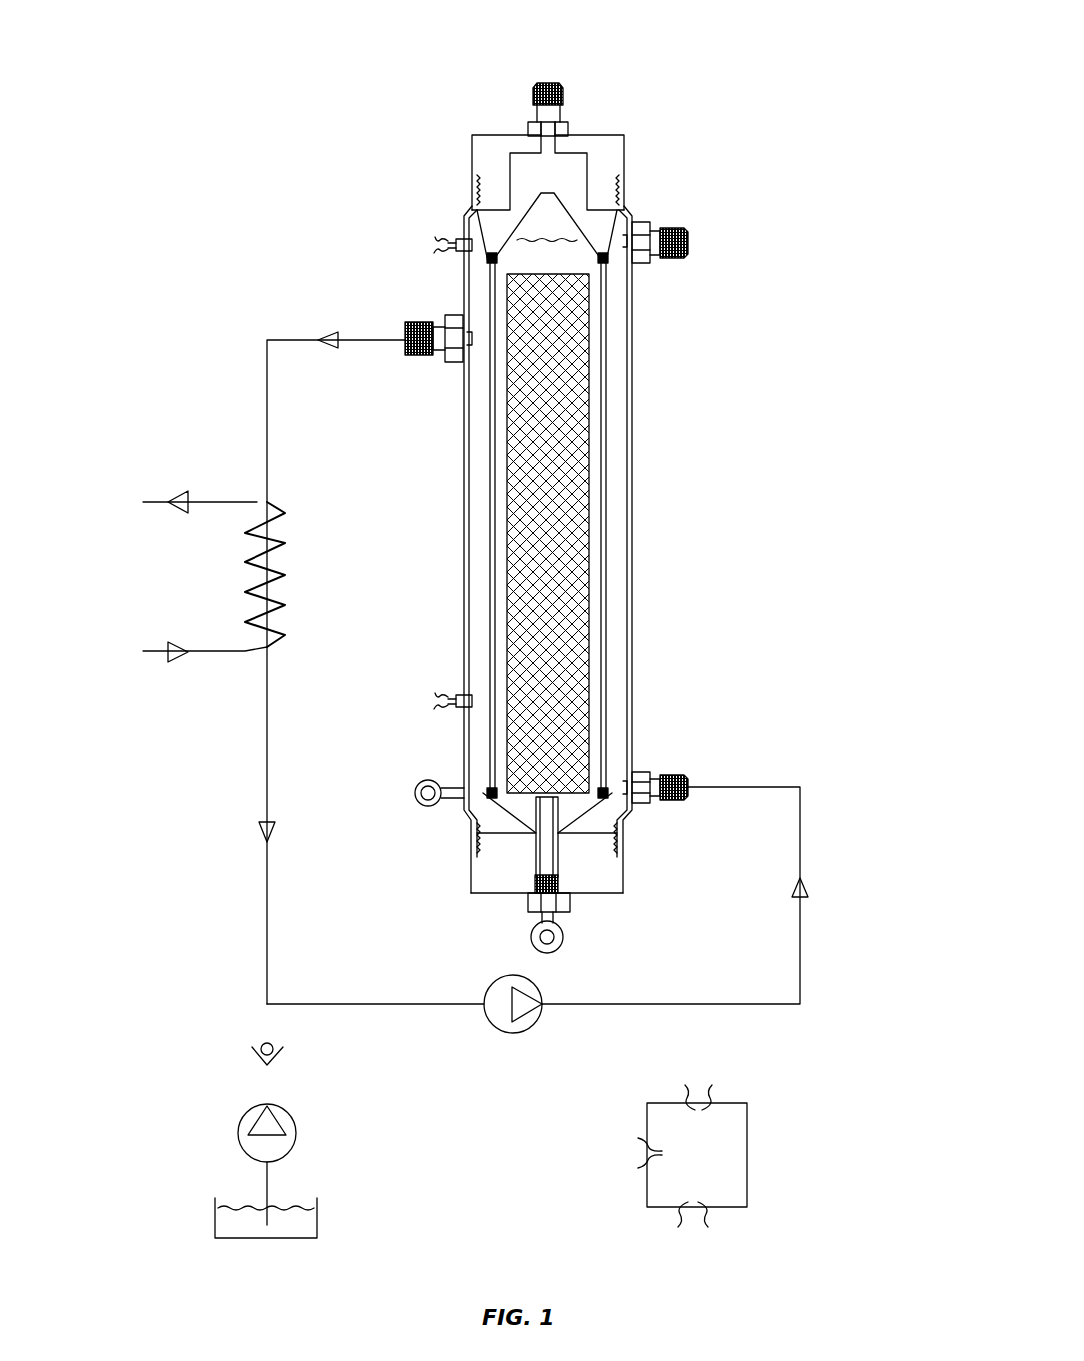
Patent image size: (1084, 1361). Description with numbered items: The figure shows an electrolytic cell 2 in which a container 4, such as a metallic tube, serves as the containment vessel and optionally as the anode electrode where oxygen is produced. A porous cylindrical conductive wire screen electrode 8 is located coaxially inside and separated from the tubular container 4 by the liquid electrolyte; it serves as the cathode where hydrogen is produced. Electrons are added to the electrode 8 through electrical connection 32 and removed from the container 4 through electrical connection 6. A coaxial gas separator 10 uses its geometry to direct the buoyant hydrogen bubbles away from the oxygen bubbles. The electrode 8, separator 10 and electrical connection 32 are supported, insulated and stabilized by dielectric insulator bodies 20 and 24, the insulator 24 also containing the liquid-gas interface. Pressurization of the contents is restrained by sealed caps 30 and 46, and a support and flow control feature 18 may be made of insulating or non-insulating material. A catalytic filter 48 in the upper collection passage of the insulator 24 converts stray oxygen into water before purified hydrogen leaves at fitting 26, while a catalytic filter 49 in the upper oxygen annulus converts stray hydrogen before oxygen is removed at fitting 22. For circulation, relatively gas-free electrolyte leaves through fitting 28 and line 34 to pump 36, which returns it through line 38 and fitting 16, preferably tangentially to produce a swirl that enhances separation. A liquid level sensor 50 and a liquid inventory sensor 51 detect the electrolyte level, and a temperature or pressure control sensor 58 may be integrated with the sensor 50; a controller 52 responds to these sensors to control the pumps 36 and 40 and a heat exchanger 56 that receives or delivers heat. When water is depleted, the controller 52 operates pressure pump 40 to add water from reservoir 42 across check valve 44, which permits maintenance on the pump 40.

The electrolytic cell 2 is at (343, 86).
The container 4 is at (463, 405).
The electrical connection 6 is at (420, 781).
The cylindrical conductive wire screen electrode 8 is at (540, 497).
The gas separator 10 is at (606, 424).
The fitting 16 is at (682, 768).
The support and flow control feature 18 is at (472, 835).
The dielectric insulator body 20 is at (590, 815).
The fitting 22 is at (680, 230).
The insulator 24 is at (598, 220).
The fitting 26 is at (561, 82).
The fitting 28 is at (426, 355).
The sealed cap 30 is at (594, 870).
The electrical connection 32 is at (563, 941).
The line 34 is at (296, 338).
The pump 36 is at (521, 1032).
The line 38 is at (802, 942).
The pump 40 is at (297, 1135).
The reservoir 42 is at (318, 1220).
The check valve 44 is at (276, 1055).
The sealed cap 46 is at (597, 133).
The catalytic filter 48 is at (557, 197).
The catalytic filter 49 is at (607, 228).
The sensor 50 is at (447, 243).
The liquid inventory sensor 51 is at (450, 699).
The controller 52 is at (715, 1140).
The heat exchanger 56 is at (245, 563).
The temperature or pressure control sensor 58 is at (461, 218).